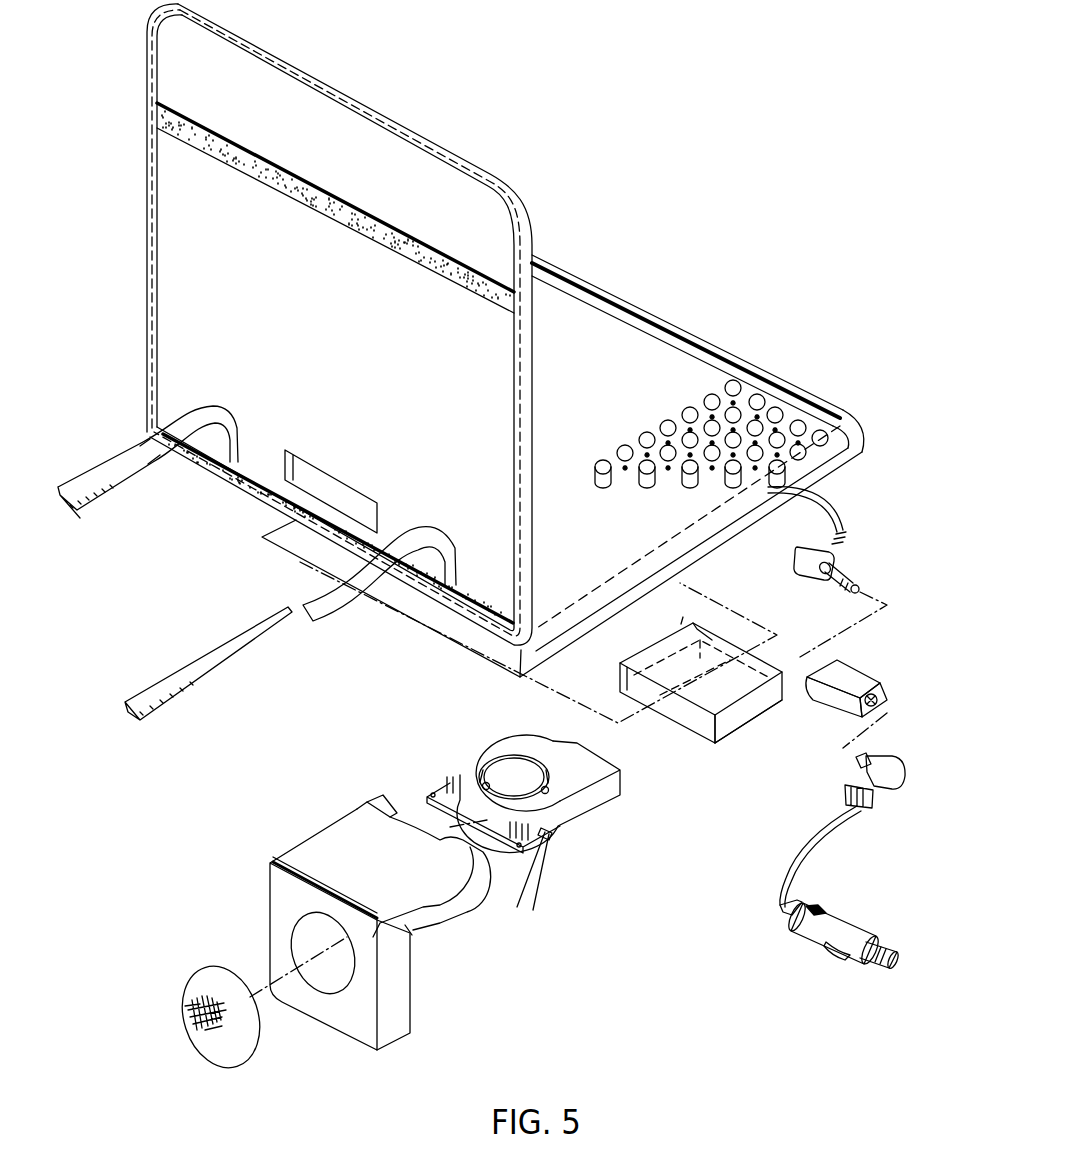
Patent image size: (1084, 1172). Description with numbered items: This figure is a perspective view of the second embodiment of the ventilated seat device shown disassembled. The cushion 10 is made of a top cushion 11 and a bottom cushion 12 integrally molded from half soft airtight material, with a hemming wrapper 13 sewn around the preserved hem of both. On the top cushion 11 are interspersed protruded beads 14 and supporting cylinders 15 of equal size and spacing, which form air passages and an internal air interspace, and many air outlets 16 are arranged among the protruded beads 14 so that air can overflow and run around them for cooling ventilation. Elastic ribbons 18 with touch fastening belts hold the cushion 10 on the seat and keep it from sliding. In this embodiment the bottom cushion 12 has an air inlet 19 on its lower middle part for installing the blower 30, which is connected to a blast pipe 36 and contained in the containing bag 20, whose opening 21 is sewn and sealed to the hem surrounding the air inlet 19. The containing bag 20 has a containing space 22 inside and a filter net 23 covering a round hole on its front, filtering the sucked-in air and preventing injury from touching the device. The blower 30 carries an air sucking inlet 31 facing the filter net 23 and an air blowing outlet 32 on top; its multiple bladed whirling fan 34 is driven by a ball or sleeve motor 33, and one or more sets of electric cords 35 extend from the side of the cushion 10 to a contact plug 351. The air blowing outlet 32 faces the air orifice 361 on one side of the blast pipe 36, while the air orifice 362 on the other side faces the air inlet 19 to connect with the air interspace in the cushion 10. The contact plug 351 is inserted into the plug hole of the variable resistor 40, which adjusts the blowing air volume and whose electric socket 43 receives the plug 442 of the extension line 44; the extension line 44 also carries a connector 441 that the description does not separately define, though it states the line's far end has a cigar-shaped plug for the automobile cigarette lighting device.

The cushion 10 is at (306, 324).
The top cushion 11 is at (584, 451).
The bottom cushion 12 is at (173, 202).
The hemming wrapper 13 is at (147, 70).
The protruded beads 14 is at (734, 384).
The supporting cylinders 15 is at (687, 480).
The air outlets 16 is at (823, 423).
The elastic ribbons 18 is at (253, 653).
The air inlet 19 is at (273, 490).
The containing bag 20 is at (328, 904).
The opening 21 is at (385, 798).
The containing space 22 is at (310, 860).
The filter net 23 is at (197, 983).
The blower 30 is at (544, 797).
The air sucking inlet 31 is at (547, 795).
The air blowing outlet 32 is at (610, 803).
The ball or sleeve motor 33 is at (513, 773).
The multiple bladed whirling fan 34 is at (487, 770).
The electric cords 35 is at (711, 716).
The contact plug 351 is at (832, 565).
The blast pipe 36 is at (683, 708).
The air orifice 361 is at (695, 720).
The air orifice 362 is at (680, 608).
The variable resistor 40 is at (869, 666).
The electric socket 43 is at (880, 688).
The extension line 44 is at (848, 861).
The cord plug 441 is at (890, 793).
The plug 442 is at (847, 928).